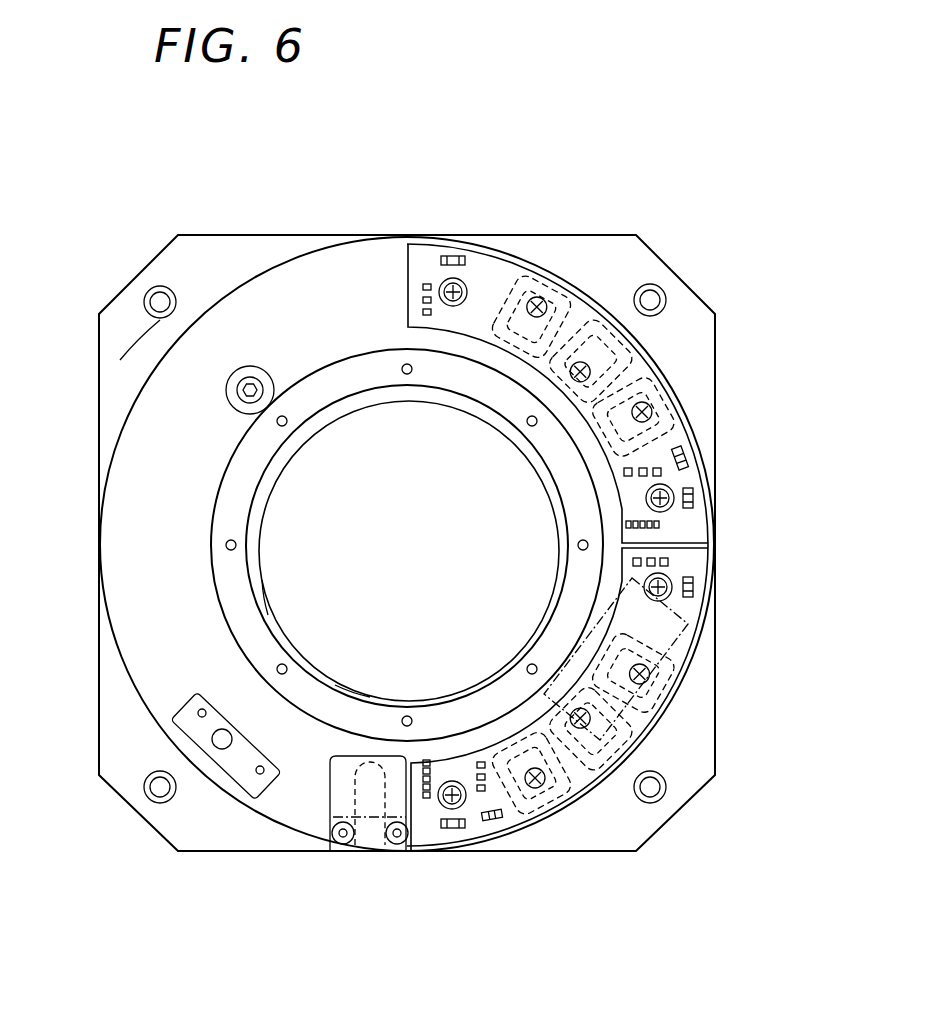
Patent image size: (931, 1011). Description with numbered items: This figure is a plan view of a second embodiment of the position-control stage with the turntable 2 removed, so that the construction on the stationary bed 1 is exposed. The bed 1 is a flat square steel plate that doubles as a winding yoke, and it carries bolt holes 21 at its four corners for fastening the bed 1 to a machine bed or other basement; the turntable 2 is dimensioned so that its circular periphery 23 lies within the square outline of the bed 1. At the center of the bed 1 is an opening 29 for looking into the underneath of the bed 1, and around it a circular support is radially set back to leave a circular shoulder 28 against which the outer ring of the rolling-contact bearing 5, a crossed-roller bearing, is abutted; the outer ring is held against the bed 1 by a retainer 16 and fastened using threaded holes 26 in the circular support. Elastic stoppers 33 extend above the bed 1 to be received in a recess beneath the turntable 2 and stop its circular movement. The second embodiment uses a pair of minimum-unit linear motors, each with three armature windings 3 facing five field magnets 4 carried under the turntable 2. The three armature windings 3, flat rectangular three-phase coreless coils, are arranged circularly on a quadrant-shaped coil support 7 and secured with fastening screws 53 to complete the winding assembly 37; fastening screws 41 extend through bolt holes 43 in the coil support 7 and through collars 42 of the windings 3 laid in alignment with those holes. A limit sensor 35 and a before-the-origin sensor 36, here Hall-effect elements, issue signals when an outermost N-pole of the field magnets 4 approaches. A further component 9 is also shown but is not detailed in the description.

The bed 1 is at (605, 262).
The turntable 2 is at (132, 555).
The armature winding 3 is at (663, 378).
The field magnet 4 is at (690, 630).
The rolling-contact bearing 5 is at (265, 597).
The coil support 7 is at (587, 330).
The connector block 9 is at (243, 775).
The retainer 16 is at (362, 380).
The bolt holes 21 is at (160, 286).
The circular periphery 23 is at (133, 400).
The threaded holes 26 is at (287, 426).
The circular shoulder 28 is at (352, 690).
The opening 29 is at (258, 508).
The elastic stoppers 33 is at (250, 366).
The limit sensor 35 is at (452, 256).
The before-the-origin sensor 36 is at (685, 451).
The winding assembly 37 is at (492, 275).
The fastening screws 41 is at (445, 806).
The collars 42 is at (442, 281).
The bolt holes 43 is at (462, 282).
The fastening screws 53 is at (539, 297).